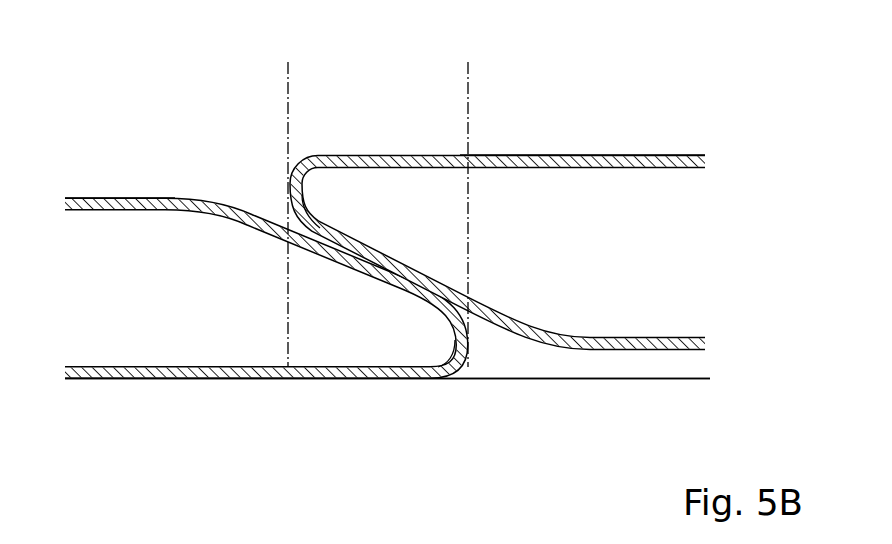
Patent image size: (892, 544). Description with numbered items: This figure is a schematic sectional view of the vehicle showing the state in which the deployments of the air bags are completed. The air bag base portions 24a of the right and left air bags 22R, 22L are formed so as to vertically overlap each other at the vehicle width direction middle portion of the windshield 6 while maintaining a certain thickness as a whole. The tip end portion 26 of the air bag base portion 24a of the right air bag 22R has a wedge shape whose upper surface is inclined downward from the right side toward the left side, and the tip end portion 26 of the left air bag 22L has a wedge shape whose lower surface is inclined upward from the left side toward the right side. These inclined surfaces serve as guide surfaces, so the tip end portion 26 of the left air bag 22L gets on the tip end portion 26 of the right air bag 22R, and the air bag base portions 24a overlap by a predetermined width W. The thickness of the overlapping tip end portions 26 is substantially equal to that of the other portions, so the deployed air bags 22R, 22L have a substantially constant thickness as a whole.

The right air bag 22R is at (140, 238).
The left air bag 22L is at (585, 198).
The air bag base portion 24a is at (115, 199).
The tip end portion 26 is at (366, 188).
The windshield 6 is at (528, 378).
The predetermined width W is at (467, 77).